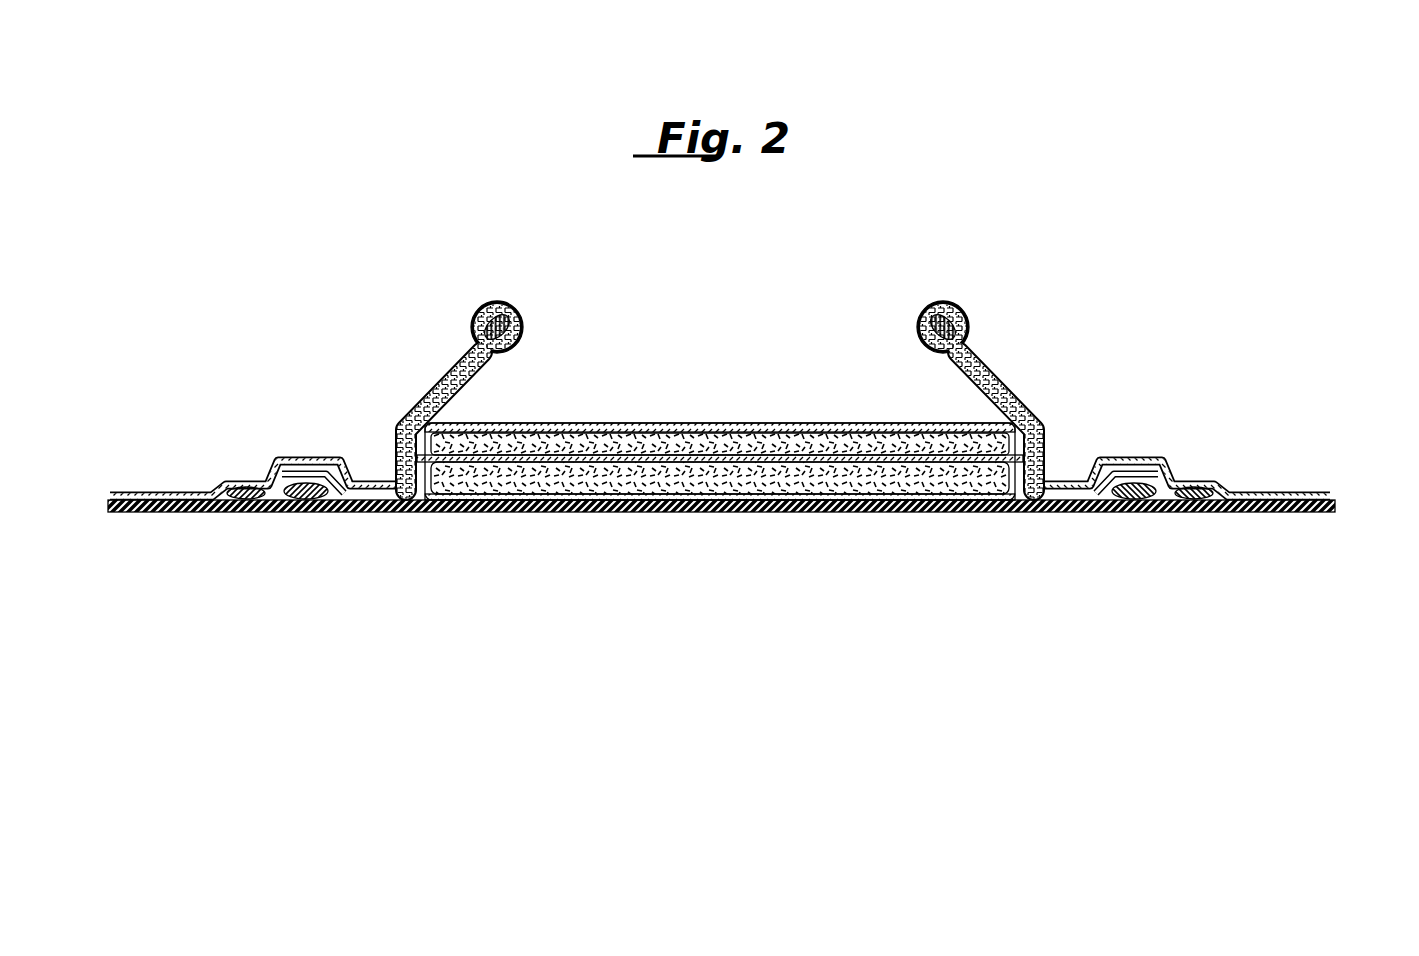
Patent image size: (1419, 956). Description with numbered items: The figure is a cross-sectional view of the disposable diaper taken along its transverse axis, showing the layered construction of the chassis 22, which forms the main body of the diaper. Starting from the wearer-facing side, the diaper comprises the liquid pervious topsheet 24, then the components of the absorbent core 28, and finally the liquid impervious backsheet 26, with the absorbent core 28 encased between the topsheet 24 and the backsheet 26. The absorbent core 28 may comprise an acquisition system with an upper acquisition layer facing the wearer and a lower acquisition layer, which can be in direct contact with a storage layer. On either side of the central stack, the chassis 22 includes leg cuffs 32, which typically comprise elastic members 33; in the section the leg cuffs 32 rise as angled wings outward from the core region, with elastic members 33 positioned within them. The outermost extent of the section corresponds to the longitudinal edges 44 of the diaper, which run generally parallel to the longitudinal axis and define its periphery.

The chassis 22 is at (772, 390).
The topsheet 24 is at (645, 423).
The backsheet 26 is at (680, 504).
The absorbent core 28 is at (1050, 457).
The leg cuffs 32 is at (430, 358).
The elastic members 33 is at (507, 312).
The longitudinal edges 44 is at (101, 512).